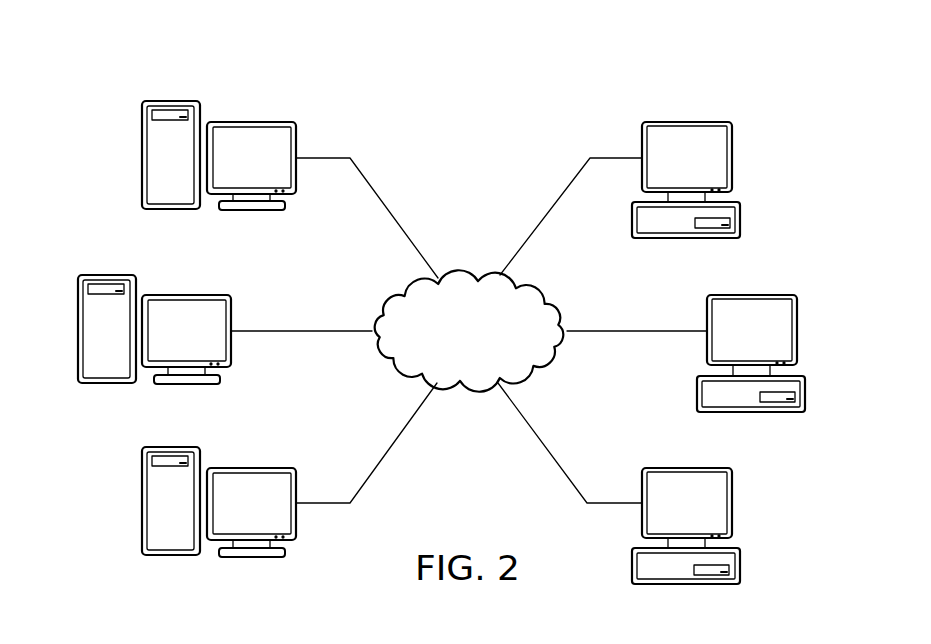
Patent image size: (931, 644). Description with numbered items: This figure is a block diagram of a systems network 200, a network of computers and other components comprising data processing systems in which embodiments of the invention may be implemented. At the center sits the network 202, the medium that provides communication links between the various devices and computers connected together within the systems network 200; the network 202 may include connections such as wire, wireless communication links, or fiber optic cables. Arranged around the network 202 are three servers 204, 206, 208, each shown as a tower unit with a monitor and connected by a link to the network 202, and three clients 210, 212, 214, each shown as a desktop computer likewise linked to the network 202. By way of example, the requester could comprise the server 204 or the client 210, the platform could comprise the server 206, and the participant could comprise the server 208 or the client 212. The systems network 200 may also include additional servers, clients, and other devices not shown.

The systems network 200 is at (602, 70).
The network 202 is at (467, 272).
The server 204 is at (142, 143).
The server 206 is at (77, 338).
The server 208 is at (142, 512).
The client 210 is at (742, 218).
The client 212 is at (805, 395).
The client 214 is at (740, 567).